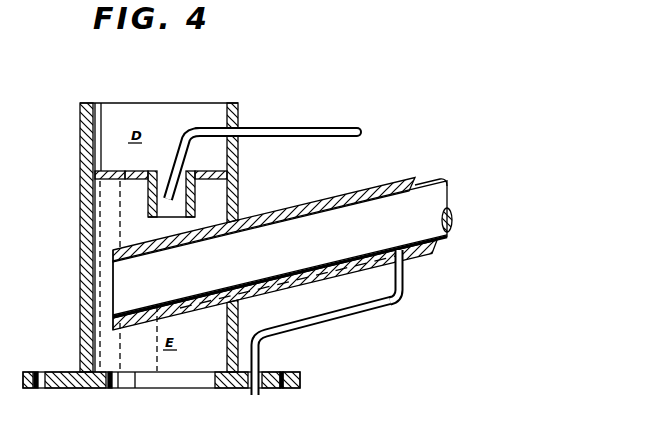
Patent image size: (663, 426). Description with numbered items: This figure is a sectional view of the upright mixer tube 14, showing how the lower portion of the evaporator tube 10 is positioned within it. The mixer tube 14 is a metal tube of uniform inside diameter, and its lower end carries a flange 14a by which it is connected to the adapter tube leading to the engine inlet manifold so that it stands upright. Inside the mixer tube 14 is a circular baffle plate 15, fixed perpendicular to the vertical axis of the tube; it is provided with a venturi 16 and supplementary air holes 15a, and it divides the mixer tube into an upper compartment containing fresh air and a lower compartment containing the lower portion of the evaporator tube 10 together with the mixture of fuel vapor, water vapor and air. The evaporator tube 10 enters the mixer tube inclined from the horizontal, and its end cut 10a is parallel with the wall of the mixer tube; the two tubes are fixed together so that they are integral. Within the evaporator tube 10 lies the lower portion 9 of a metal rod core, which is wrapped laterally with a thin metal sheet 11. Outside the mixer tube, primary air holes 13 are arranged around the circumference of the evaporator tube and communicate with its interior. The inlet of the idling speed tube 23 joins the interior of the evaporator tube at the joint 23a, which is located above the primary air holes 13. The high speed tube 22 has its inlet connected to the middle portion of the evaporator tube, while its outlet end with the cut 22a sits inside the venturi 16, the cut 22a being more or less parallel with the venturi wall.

The lower portion of metal rod core 9 is at (434, 202).
The evaporator tube 10 is at (399, 178).
The cut 10a is at (113, 322).
The thin metal sheet 11 is at (431, 183).
The primary air holes 13 is at (305, 276).
The mixer tube 14 is at (80, 264).
The flange 14a is at (303, 374).
The baffle plate 15 is at (196, 176).
The supplementary air holes 15a is at (117, 169).
The venturi 16 is at (167, 218).
The high speed tube 22 is at (262, 131).
The cut 22a is at (168, 166).
The idling speed tube 23 is at (304, 326).
The joint 23a is at (410, 258).